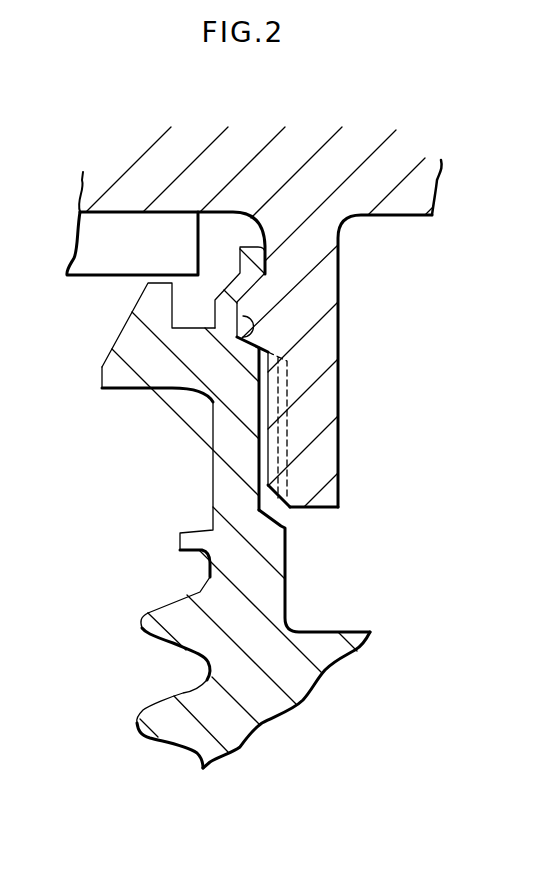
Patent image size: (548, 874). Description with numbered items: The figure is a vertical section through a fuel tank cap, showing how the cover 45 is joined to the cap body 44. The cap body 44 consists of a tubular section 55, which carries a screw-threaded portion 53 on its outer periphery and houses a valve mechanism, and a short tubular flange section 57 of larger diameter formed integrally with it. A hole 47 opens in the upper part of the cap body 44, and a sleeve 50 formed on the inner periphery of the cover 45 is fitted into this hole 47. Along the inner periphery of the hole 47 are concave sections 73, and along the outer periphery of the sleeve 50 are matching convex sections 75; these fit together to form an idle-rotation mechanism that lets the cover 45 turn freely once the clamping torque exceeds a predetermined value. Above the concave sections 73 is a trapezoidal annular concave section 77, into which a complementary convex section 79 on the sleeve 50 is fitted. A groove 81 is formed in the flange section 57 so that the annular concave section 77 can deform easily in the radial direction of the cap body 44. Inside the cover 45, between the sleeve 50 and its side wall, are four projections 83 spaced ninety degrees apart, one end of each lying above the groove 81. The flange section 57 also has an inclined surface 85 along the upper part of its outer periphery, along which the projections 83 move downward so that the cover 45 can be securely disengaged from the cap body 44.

The cap body 44 is at (124, 631).
The cover 45 is at (353, 138).
The hole 47 is at (285, 590).
The sleeve 50 is at (315, 418).
The screw-threaded portion 53 is at (140, 634).
The tubular section 55 is at (300, 682).
The flange section 57 is at (107, 368).
The concave sections 73 is at (268, 485).
The convex sections 75 is at (272, 452).
The annular concave section 77 is at (250, 340).
The convex section 79 is at (258, 298).
The groove 81 is at (176, 306).
The projections 83 is at (80, 240).
The inclined surface 85 is at (112, 332).